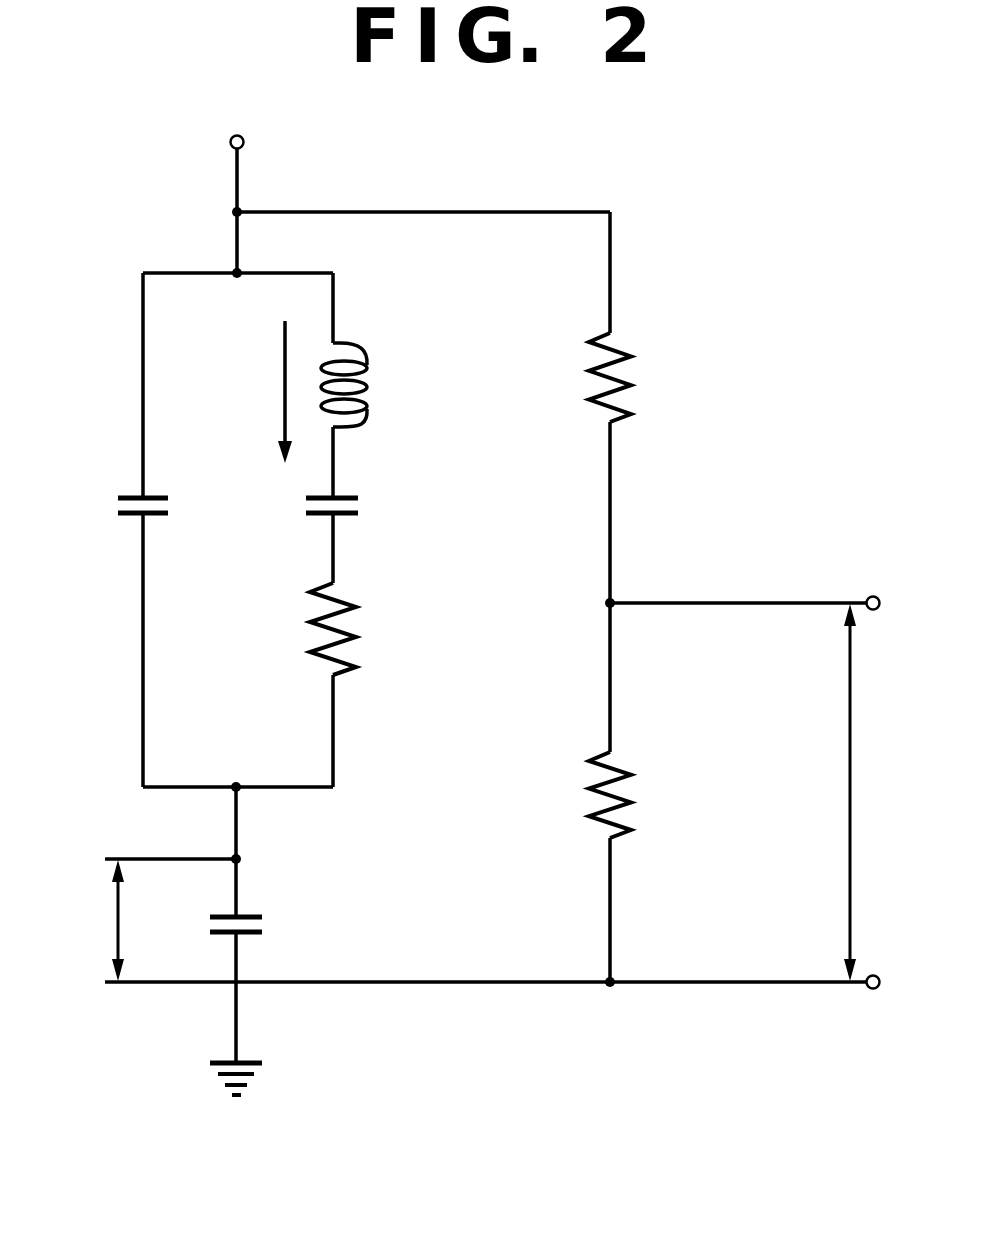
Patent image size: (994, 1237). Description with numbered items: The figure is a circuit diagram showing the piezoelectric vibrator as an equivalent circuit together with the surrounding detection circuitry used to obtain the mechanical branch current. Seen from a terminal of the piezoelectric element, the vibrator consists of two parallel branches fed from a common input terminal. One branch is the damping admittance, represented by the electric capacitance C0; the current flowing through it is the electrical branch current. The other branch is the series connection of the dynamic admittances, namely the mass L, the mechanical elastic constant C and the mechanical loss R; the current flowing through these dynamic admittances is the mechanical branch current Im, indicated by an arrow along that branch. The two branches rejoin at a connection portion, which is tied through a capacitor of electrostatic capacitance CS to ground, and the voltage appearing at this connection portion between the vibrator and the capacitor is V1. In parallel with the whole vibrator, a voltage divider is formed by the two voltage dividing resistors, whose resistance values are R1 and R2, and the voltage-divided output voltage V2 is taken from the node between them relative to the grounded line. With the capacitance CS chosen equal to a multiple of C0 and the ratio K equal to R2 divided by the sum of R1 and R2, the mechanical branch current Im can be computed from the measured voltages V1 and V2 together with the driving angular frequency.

The electric capacitance C0 is at (112, 512).
The mass L is at (360, 385).
The mechanical elastic constant C is at (355, 512).
The mechanical loss R is at (351, 629).
The mechanical branch current Im is at (259, 392).
The resistance value of the voltage dividing resistor R1 is at (635, 377).
The resistance value of the voltage dividing resistor R2 is at (635, 795).
The electrostatic capacitance of the capacitor CS is at (269, 925).
The voltage applied to the connection portion V1 is at (90, 920).
The voltage-divided output voltage V2 is at (854, 792).